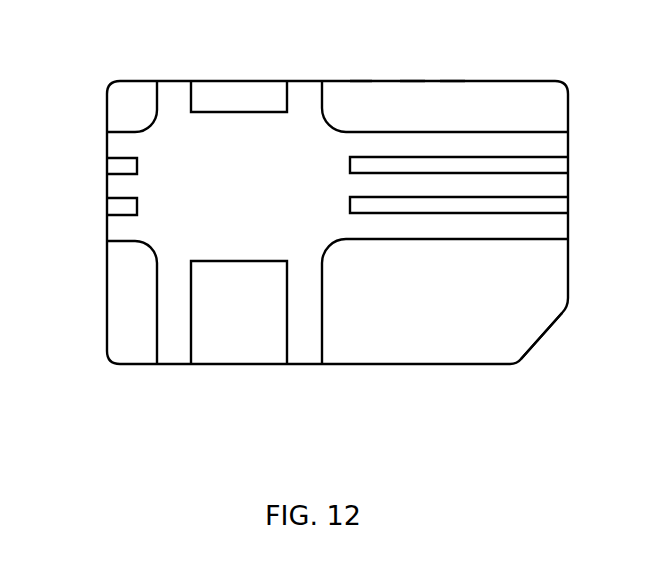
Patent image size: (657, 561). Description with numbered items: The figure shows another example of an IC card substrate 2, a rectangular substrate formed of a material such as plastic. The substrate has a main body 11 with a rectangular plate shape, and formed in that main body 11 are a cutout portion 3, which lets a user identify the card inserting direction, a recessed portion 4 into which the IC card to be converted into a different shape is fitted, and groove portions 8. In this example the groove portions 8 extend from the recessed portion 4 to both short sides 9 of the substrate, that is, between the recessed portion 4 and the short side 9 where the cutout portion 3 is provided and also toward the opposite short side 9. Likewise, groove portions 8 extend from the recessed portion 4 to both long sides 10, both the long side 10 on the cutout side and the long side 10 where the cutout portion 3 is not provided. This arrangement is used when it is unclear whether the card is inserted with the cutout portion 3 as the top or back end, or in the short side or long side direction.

The short side 9 is at (96, 302).
The groove portions 8 is at (174, 87).
The recessed portion 4 is at (233, 110).
The long side 10 is at (360, 81).
The IC card substrate 2 is at (413, 90).
The main body 11 is at (453, 80).
The cutout portion 3 is at (543, 335).